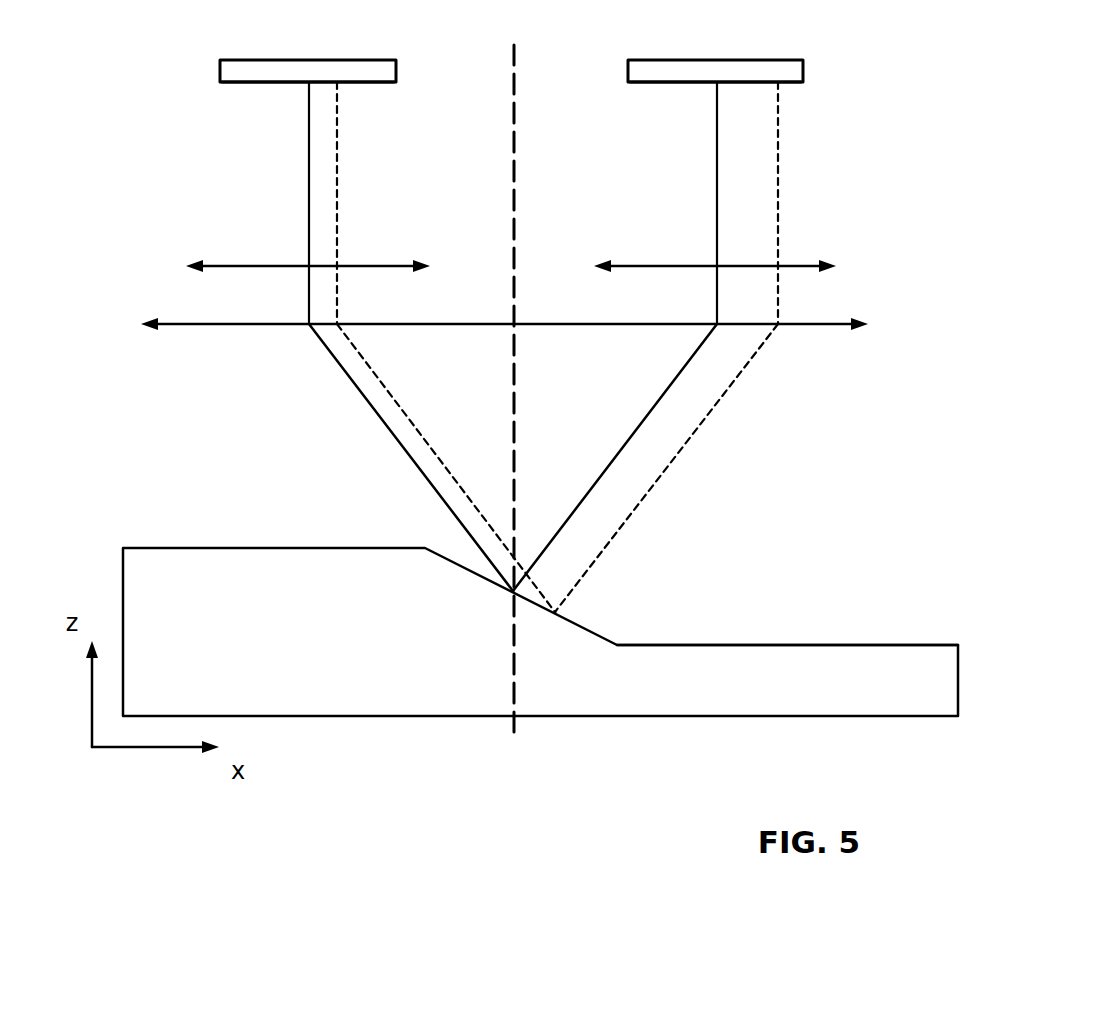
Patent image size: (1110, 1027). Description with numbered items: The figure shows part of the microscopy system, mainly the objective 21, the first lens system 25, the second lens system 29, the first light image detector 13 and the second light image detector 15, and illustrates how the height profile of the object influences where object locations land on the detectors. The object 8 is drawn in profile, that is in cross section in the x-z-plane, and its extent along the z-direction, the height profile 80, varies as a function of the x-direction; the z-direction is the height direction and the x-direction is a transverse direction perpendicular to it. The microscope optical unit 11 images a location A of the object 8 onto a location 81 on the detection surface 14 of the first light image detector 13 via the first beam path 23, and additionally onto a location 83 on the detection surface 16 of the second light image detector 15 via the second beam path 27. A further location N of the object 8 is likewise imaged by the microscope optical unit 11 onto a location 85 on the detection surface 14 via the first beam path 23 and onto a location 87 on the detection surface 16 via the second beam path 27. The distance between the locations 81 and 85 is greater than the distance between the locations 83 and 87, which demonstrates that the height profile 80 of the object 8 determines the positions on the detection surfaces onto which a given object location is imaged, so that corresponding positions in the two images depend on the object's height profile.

The object 8 is at (540, 632).
The microscope optical unit 11 is at (833, 419).
The first light image detector 13 is at (765, 58).
The detection surface 14 is at (657, 84).
The second light image detector 15 is at (250, 58).
The detection surface 16 is at (248, 84).
The objective 21 is at (816, 322).
The first beam path 23 is at (628, 452).
The first lens system 25 is at (795, 262).
The second beam path 27 is at (417, 435).
The second lens system 29 is at (240, 262).
The height profile 80 is at (652, 645).
The location on detection surface 81 is at (717, 85).
The location on detection surface 83 is at (308, 85).
The location on detection surface 85 is at (778, 85).
The location on detection surface 87 is at (338, 85).
The location of the object A is at (505, 596).
The further location of the object N is at (557, 625).